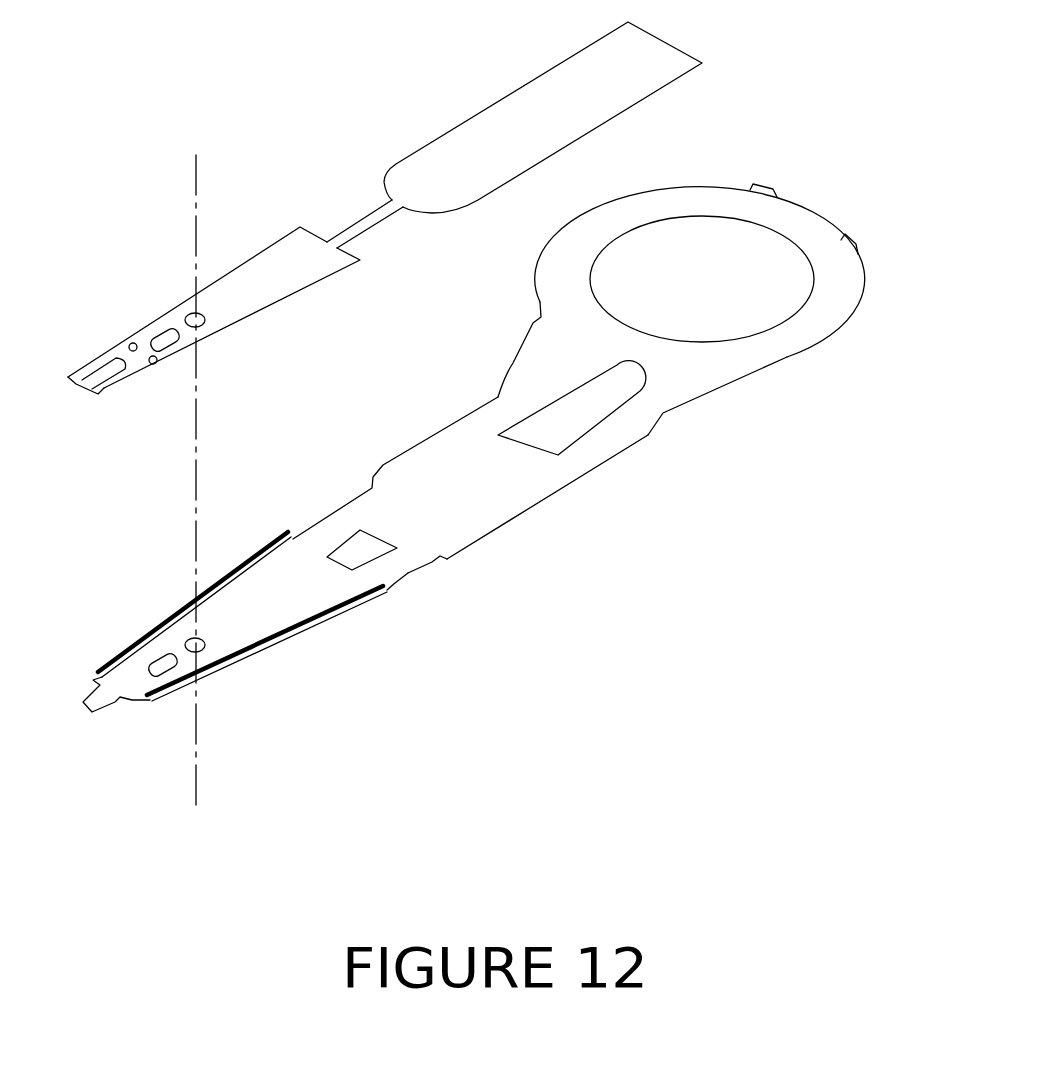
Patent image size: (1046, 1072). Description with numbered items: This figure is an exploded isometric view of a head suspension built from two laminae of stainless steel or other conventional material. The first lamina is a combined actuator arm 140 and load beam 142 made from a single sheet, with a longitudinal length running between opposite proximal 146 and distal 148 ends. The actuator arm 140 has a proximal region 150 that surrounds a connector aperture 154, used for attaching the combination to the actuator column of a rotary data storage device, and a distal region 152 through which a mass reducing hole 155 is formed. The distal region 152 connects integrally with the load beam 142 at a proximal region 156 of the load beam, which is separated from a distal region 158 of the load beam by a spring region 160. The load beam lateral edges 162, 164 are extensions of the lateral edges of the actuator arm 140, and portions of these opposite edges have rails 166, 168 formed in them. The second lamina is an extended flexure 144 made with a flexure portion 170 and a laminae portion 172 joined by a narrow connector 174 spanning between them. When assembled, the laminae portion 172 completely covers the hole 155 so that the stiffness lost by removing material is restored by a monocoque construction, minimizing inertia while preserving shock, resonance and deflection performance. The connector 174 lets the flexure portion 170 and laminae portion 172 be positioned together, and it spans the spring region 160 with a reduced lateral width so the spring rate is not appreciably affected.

The actuator arm 140 is at (484, 469).
The load beam 142 is at (361, 578).
The extended flexure 144 is at (385, 197).
The proximal end 146 is at (807, 210).
The distal end 148 is at (120, 698).
The proximal region 150 is at (734, 244).
The distal region 152 is at (567, 497).
The connector aperture 154 is at (702, 236).
The mass reducing hole 155 is at (535, 402).
The proximal region of the load beam 156 is at (476, 587).
The distal region of the load beam 158 is at (269, 646).
The spring region 160 is at (393, 468).
The load beam lateral edge 162 is at (313, 523).
The load beam lateral edge 164 is at (408, 568).
The rail 166 is at (145, 638).
The rail 168 is at (160, 697).
The flexure portion 170 is at (140, 333).
The laminae portion 172 is at (570, 78).
The narrow connector 174 is at (368, 223).